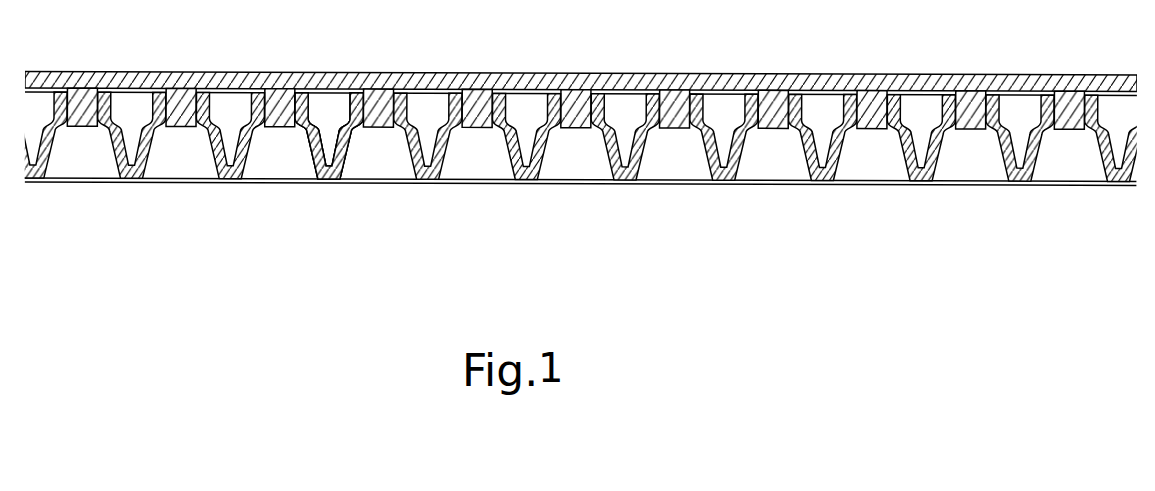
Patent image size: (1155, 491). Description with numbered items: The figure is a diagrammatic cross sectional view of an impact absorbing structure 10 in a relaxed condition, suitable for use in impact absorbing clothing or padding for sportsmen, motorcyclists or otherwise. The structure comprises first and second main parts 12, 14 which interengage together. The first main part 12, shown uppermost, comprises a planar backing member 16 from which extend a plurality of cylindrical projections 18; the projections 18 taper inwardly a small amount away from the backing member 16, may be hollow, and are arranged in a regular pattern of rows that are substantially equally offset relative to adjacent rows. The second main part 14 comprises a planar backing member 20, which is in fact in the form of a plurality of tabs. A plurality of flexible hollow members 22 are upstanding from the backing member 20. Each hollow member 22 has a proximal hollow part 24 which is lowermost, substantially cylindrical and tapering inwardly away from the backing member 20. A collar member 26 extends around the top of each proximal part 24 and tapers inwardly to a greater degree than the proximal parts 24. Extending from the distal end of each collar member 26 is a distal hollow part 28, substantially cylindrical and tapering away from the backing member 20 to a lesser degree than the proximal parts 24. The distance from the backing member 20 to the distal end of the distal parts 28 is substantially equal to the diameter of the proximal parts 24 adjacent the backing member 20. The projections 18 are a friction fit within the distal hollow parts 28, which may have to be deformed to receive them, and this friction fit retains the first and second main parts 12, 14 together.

The impact absorbing structure 10 is at (973, 190).
The first main part 12 is at (840, 70).
The second main part 14 is at (869, 189).
The planar backing member 16 is at (625, 80).
The cylindrical projections 18 is at (763, 122).
The planar backing member 20 is at (567, 183).
The flexible hollow members 22 is at (501, 153).
The proximal hollow part 24 is at (337, 152).
The collar member 26 is at (307, 138).
The distal hollow parts 28 is at (205, 105).